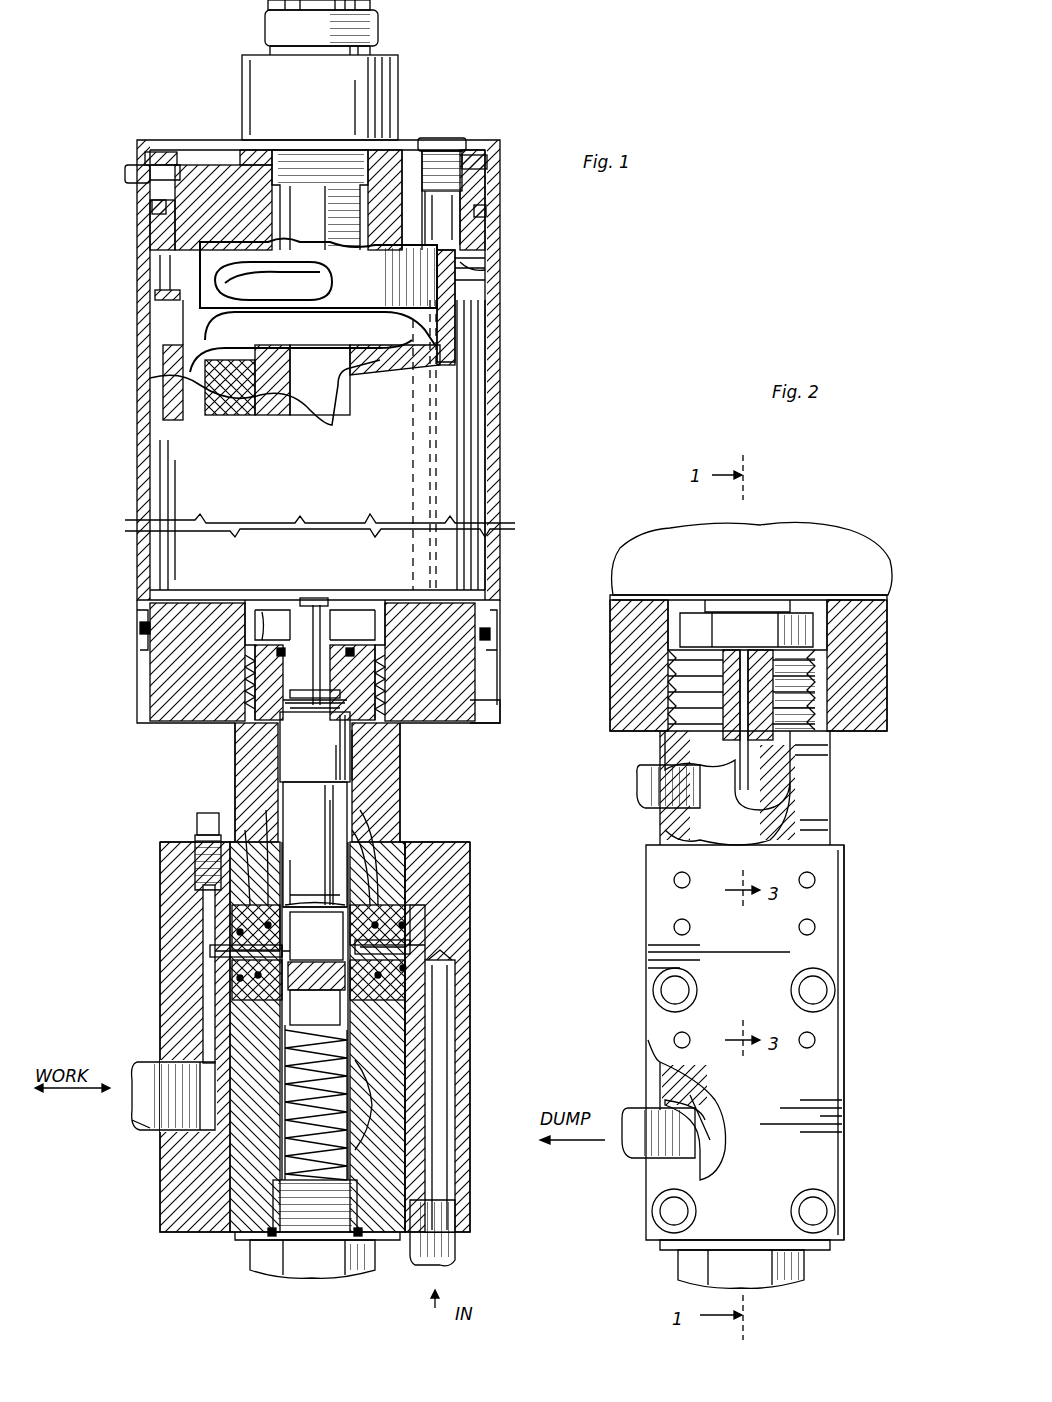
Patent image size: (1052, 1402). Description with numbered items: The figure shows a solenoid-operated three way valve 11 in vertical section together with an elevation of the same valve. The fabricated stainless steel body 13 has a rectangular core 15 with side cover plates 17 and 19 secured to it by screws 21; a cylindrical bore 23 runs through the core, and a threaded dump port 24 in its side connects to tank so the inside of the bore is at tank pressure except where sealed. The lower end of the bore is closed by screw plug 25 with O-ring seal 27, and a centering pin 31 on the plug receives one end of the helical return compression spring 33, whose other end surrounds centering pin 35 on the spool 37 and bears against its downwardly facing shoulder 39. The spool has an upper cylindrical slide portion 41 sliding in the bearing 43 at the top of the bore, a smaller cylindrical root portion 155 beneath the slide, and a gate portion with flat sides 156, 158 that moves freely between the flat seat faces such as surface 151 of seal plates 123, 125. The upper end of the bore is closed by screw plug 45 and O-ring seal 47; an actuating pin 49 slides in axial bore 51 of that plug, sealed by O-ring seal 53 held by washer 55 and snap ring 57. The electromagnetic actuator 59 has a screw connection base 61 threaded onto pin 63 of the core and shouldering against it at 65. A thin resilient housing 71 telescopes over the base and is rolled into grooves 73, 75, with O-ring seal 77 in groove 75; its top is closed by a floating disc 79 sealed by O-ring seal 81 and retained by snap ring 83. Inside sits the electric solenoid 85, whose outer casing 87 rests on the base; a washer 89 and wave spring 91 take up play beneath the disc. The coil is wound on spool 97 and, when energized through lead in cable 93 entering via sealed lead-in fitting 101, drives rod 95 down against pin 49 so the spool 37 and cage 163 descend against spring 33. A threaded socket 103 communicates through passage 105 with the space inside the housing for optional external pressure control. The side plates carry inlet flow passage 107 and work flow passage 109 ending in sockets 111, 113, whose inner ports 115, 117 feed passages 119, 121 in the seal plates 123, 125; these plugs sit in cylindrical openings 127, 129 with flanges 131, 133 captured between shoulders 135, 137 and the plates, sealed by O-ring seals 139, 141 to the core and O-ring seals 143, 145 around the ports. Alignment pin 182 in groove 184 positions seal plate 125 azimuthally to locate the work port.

In FIG. 2, the valve 11 is at (630, 860).
In FIG. 2, the body 13 is at (752, 1192).
In FIG. 1, the core 15 is at (386, 1192).
In FIG. 2, the core 15 is at (832, 782).
In FIG. 1, the side cover plate 17 is at (456, 1110).
In FIG. 2, the side cover plate 17 is at (825, 1175).
In FIG. 1, the side cover plate 19 is at (187, 1158).
In FIG. 2, the screws 21 is at (663, 982).
In FIG. 1, the cylindrical bore 23 is at (392, 1105).
In FIG. 2, the cylindrical bore 23 is at (712, 1120).
In FIG. 2, the dump port 24 is at (700, 1135).
In FIG. 1, the screw plug 25 is at (262, 1265).
In FIG. 1, the O-ring seal 27 is at (250, 1242).
In FIG. 1, the cylindrical centering pin 31 is at (332, 1162).
In FIG. 1, the helical return compression spring 33 is at (337, 1090).
In FIG. 1, the cylindrical centering pin 35 is at (342, 1060).
In FIG. 1, the spool 37 is at (320, 820).
In FIG. 1, the downwardly facing shoulder 39 is at (362, 1026).
In FIG. 1, the cylindrical slide portion 41 is at (338, 765).
In FIG. 1, the bearing 43 is at (356, 745).
In FIG. 1, the screw plug 45 is at (380, 656).
In FIG. 1, the O-ring seal 47 is at (370, 620).
In FIG. 1, the actuating pin 49 is at (316, 610).
In FIG. 1, the axial bore 51 is at (265, 620).
In FIG. 1, the O-ring seal 53 is at (340, 702).
In FIG. 1, the washer 55 is at (315, 747).
In FIG. 1, the snap ring 57 is at (297, 705).
In FIG. 1, the actuator 59 is at (497, 445).
In FIG. 1, the screw connection base 61 is at (413, 608).
In FIG. 1, the threaded pin 63 is at (366, 676).
In FIG. 1, the shoulder 65 is at (234, 745).
In FIG. 1, the resilient housing 71 is at (492, 378).
In FIG. 1, the groove 73 is at (485, 728).
In FIG. 1, the groove 75 is at (490, 620).
In FIG. 1, the O-ring seal 77 is at (490, 642).
In FIG. 1, the floating cylindrical disc 79 is at (210, 170).
In FIG. 1, the O-ring seal 81 is at (152, 206).
In FIG. 1, the snap ring 83 is at (160, 158).
In FIG. 1, the electric solenoid 85 is at (175, 405).
In FIG. 1, the outer casing 87 is at (158, 325).
In FIG. 1, the washer 89 is at (470, 276).
In FIG. 1, the wave spring 91 is at (490, 263).
In FIG. 1, the lead in cable 93 is at (198, 340).
In FIG. 1, the rod 95 is at (297, 605).
In FIG. 1, the spool 97 is at (326, 370).
In FIG. 1, the sealed lead-in fitting 101 is at (398, 80).
In FIG. 2, the threaded socket 103 is at (662, 820).
In FIG. 2, the passage 105 is at (832, 758).
In FIG. 1, the flow passage 107 is at (440, 1130).
In FIG. 1, the flow passage 109 is at (204, 1025).
In FIG. 1, the socket 111 is at (440, 1220).
In FIG. 1, the socket 113 is at (178, 1065).
In FIG. 1, the port 115 is at (386, 946).
In FIG. 1, the port 117 is at (283, 955).
In FIG. 1, the passage 119 is at (407, 916).
In FIG. 1, the passage 121 is at (275, 949).
In FIG. 1, the seal plate 123 is at (375, 848).
In FIG. 1, the seal plate 125 is at (242, 870).
In FIG. 1, the cylindrical opening 127 is at (380, 825).
In FIG. 1, the cylindrical opening 129 is at (266, 880).
In FIG. 1, the flange 131 is at (396, 978).
In FIG. 1, the flange 133 is at (240, 982).
In FIG. 1, the shoulder 135 is at (440, 882).
In FIG. 1, the shoulder 137 is at (252, 920).
In FIG. 1, the O-ring seal 139 is at (385, 1000).
In FIG. 1, the O-ring seal 141 is at (256, 955).
In FIG. 1, the O-ring seal 143 is at (412, 955).
In FIG. 1, the O-ring seal 145 is at (233, 977).
In FIG. 1, the flat surface 151 is at (318, 1007).
In FIG. 1, the root portion 155 is at (332, 800).
In FIG. 1, the flat side 156 is at (311, 865).
In FIG. 1, the flat side 158 is at (327, 905).
In FIG. 1, the cage 163 is at (322, 941).
In FIG. 1, the alignment pin 182 is at (215, 895).
In FIG. 1, the groove 184 is at (210, 865).